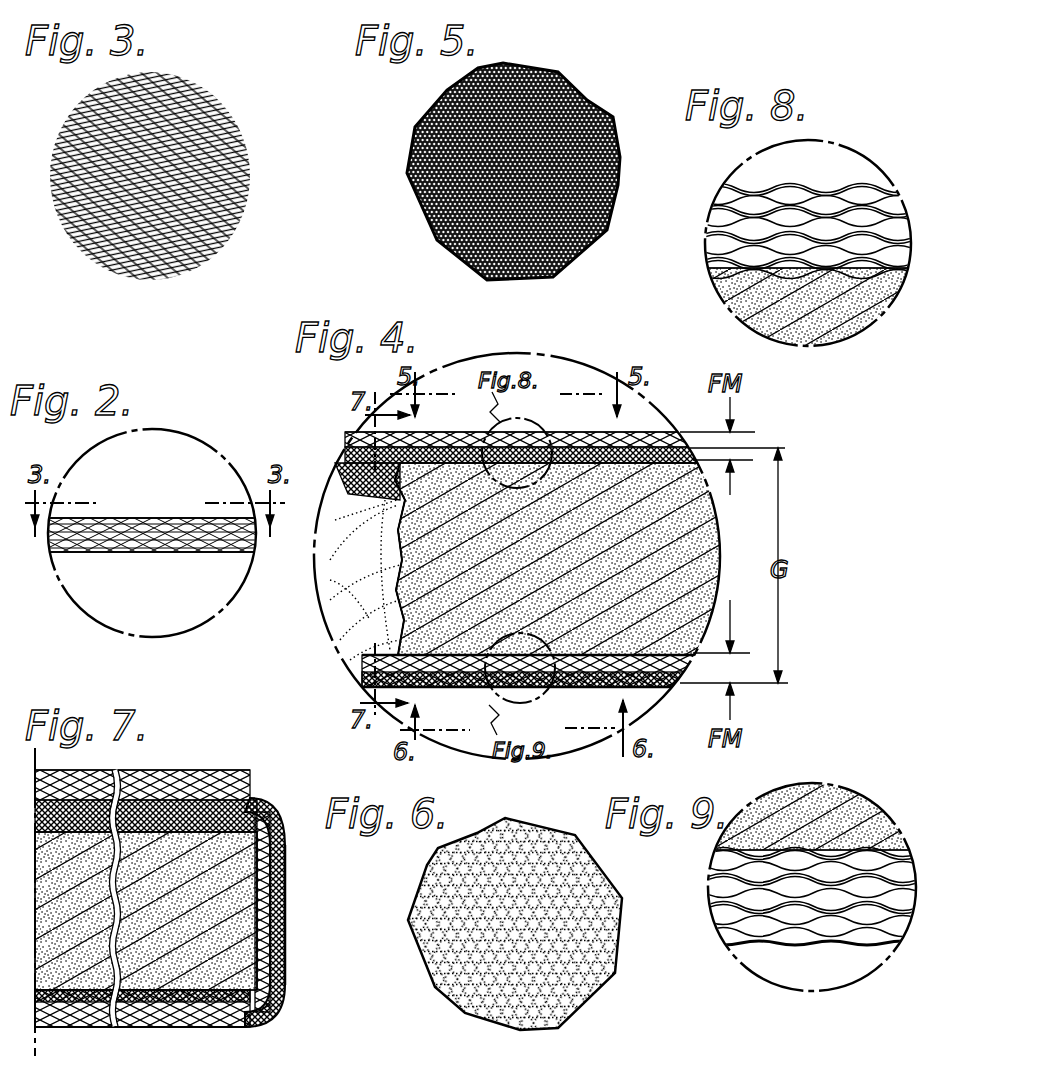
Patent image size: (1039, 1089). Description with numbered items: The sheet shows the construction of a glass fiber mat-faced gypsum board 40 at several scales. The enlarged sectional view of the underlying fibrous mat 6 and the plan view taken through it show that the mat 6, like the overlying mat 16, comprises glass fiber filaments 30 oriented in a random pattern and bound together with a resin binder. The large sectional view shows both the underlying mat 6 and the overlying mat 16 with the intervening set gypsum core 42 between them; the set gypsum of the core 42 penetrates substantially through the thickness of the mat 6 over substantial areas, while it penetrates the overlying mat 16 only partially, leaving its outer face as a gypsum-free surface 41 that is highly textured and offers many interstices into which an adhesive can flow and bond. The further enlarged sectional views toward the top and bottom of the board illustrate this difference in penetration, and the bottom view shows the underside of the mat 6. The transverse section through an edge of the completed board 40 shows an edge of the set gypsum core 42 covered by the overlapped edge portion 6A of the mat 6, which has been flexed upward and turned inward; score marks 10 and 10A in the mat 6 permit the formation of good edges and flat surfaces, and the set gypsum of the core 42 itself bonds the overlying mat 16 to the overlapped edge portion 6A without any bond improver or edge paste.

In FIG. 3, the fibrous mat 6 is at (215, 100).
In FIG. 2, the fibrous mat 6 is at (166, 552).
In FIG. 4, the fibrous mat 6 is at (585, 686).
In FIG. 7, the fibrous mat 6 is at (178, 1027).
In FIG. 6, the fibrous mat 6 is at (584, 992).
In FIG. 9, the fibrous mat 6 is at (775, 945).
In FIG. 4, the overlapped edge portion 6A is at (422, 500).
In FIG. 7, the overlapped edge portion 6A is at (150, 844).
In FIG. 7, the score mark 10 is at (281, 990).
In FIG. 7, the score mark 10A is at (266, 802).
In FIG. 5, the overlying mat 16 is at (587, 112).
In FIG. 8, the overlying mat 16 is at (822, 190).
In FIG. 4, the overlying mat 16 is at (580, 432).
In FIG. 7, the overlying mat 16 is at (186, 770).
In FIG. 3, the glass fiber filaments 30 is at (248, 143).
In FIG. 2, the glass fiber filaments 30 is at (165, 520).
In FIG. 4, the gypsum board 40 is at (340, 598).
In FIG. 7, the gypsum board 40 is at (287, 882).
In FIG. 5, the gypsum-free surface 41 is at (600, 214).
In FIG. 8, the gypsum-free surface 41 is at (755, 195).
In FIG. 8, the set gypsum core 42 is at (835, 330).
In FIG. 4, the set gypsum core 42 is at (685, 530).
In FIG. 7, the set gypsum core 42 is at (217, 925).
In FIG. 9, the set gypsum core 42 is at (830, 800).